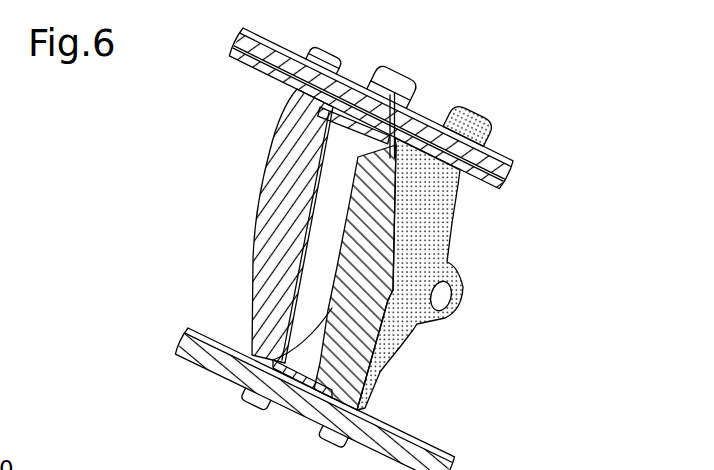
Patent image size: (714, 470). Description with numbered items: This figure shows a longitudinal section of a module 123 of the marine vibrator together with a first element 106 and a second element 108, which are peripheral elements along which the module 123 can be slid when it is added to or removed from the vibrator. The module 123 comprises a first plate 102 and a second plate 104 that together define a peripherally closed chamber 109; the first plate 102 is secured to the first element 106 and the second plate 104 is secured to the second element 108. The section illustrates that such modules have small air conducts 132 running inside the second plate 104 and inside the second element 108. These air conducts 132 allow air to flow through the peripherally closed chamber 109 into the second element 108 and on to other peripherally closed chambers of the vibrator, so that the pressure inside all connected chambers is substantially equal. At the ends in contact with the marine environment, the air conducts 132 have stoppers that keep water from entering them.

The first plate 102 is at (272, 280).
The second plate 104 is at (430, 234).
The first element 106 is at (188, 338).
The second element 108 is at (358, 76).
The peripherally closed chamber 109 is at (339, 163).
The module 123 is at (237, 151).
The air conducts 132 is at (401, 144).